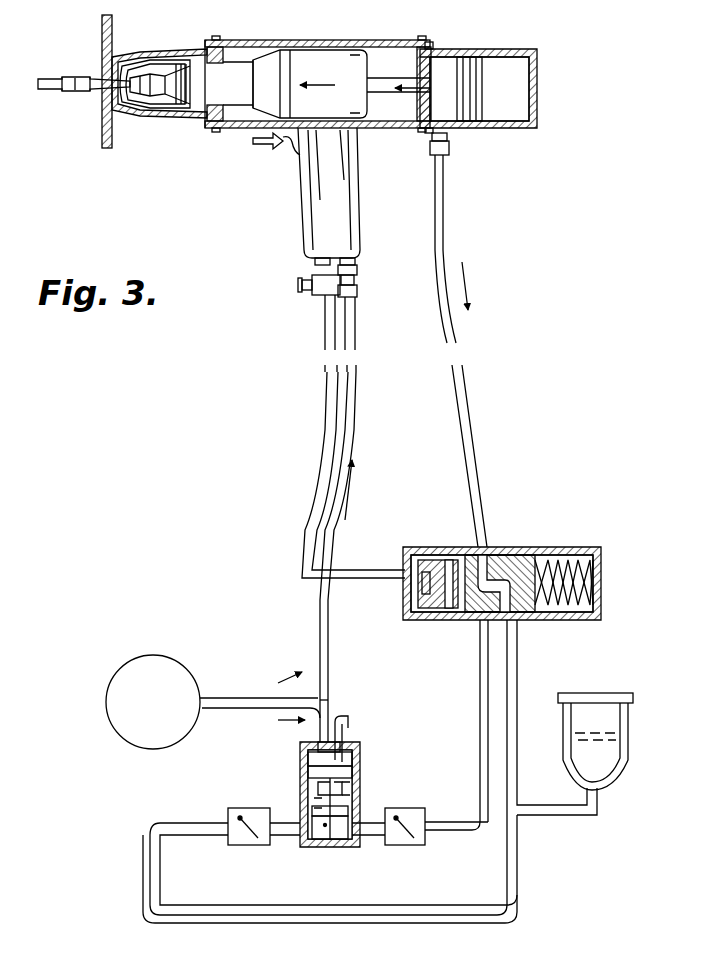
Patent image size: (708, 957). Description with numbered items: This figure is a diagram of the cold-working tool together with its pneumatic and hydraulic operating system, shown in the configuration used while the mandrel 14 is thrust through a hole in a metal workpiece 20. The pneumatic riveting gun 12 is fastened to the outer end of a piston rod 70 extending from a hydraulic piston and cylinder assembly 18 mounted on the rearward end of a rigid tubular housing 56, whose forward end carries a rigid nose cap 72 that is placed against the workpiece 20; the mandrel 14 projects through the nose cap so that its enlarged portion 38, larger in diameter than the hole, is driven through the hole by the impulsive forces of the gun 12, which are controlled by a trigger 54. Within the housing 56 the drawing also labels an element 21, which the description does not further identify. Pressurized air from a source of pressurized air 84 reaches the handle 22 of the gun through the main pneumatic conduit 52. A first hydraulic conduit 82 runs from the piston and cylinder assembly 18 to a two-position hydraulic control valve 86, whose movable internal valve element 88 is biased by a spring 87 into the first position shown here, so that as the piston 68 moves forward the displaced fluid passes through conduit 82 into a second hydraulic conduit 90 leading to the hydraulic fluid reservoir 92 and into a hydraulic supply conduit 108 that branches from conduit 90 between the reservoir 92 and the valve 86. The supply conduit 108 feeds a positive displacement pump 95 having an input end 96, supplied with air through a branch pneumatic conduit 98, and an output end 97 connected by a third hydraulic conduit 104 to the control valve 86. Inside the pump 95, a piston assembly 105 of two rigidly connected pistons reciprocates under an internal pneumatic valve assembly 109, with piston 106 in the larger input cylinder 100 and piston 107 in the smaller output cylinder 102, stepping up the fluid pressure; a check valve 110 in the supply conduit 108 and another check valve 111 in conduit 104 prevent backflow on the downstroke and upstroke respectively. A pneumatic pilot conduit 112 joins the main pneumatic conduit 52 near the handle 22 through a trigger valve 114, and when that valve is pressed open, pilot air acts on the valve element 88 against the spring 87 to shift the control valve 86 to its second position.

The pneumatic riveting gun 12 is at (290, 170).
The mandrel 14 is at (86, 70).
The hydraulic piston and cylinder assembly 18 is at (530, 42).
The metal workpiece 20 is at (114, 26).
The piston 21 is at (345, 55).
The handle 22 is at (345, 222).
The enlarged portion 38 is at (68, 95).
The main pneumatic conduit 52 is at (352, 388).
The trigger 54 is at (283, 150).
The rigid tubular housing 56 is at (268, 40).
The piston 68 is at (468, 52).
The piston rod 70 is at (380, 85).
The rigid nose cap 72 is at (178, 40).
The first hydraulic conduit 82 is at (437, 212).
The source of pressurized air 84 is at (148, 655).
The two-position hydraulic control valve 86 is at (585, 625).
The spring 87 is at (600, 552).
The movable internal valve element 88 is at (500, 566).
The second hydraulic conduit 90 is at (512, 672).
The hydraulic fluid reservoir 92 is at (628, 752).
The positive displacement pump 95 is at (395, 770).
The input end 96 is at (360, 752).
The output end 97 is at (370, 812).
The branch pneumatic conduit 98 is at (330, 705).
The input cylinder 100 is at (352, 790).
The output cylinder 102 is at (325, 830).
The third hydraulic conduit 104 is at (480, 686).
The piston assembly 105 is at (300, 778).
The piston 106 is at (300, 752).
The piston 107 is at (300, 800).
The hydraulic supply conduit 108 is at (420, 910).
The internal pneumatic valve assembly 109 is at (346, 740).
The check valve 110 is at (245, 845).
The check valve 111 is at (403, 845).
The pneumatic pilot conduit 112 is at (318, 468).
The trigger valve 114 is at (310, 295).